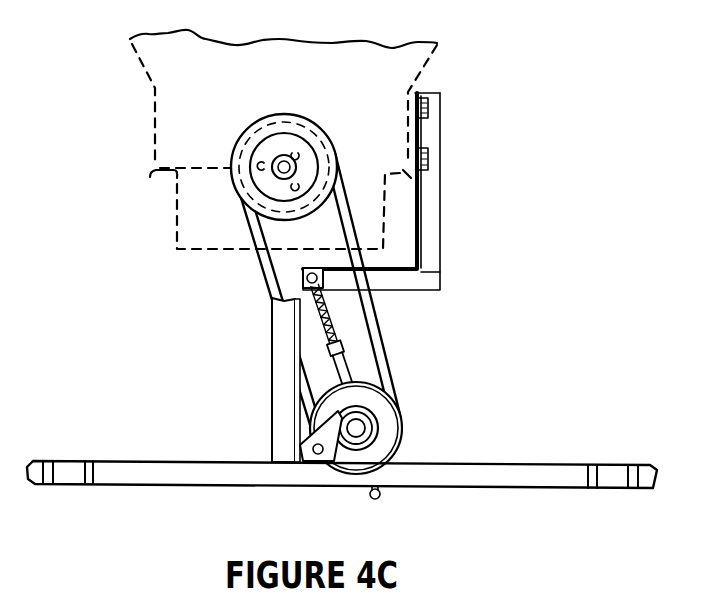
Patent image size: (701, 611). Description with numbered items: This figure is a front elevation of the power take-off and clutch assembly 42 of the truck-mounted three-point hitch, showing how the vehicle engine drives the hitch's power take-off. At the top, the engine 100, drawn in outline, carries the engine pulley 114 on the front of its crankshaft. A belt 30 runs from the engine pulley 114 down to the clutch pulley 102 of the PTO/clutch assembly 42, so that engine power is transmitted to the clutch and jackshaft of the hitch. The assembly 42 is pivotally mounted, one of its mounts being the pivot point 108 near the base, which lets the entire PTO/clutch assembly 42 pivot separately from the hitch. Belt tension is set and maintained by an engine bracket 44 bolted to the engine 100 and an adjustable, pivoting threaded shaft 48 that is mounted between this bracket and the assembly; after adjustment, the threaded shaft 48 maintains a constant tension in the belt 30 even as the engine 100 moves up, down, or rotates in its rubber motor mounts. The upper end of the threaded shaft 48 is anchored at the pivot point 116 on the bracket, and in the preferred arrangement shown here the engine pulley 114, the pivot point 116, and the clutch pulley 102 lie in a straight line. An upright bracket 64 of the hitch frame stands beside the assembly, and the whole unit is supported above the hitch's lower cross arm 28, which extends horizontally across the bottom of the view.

The engine 100 is at (370, 90).
The engine pulley 114 is at (270, 151).
The engine bracket 44 is at (432, 205).
The belt 30 is at (390, 351).
The upright bracket 64 is at (272, 405).
The pivot point 116 is at (306, 282).
The threaded shaft 48 is at (335, 326).
The clutch pulley 102 is at (403, 428).
The pivot point 108 is at (316, 454).
The lower cross arm 28 is at (483, 463).
The PTO/clutch assembly 42 is at (470, 333).